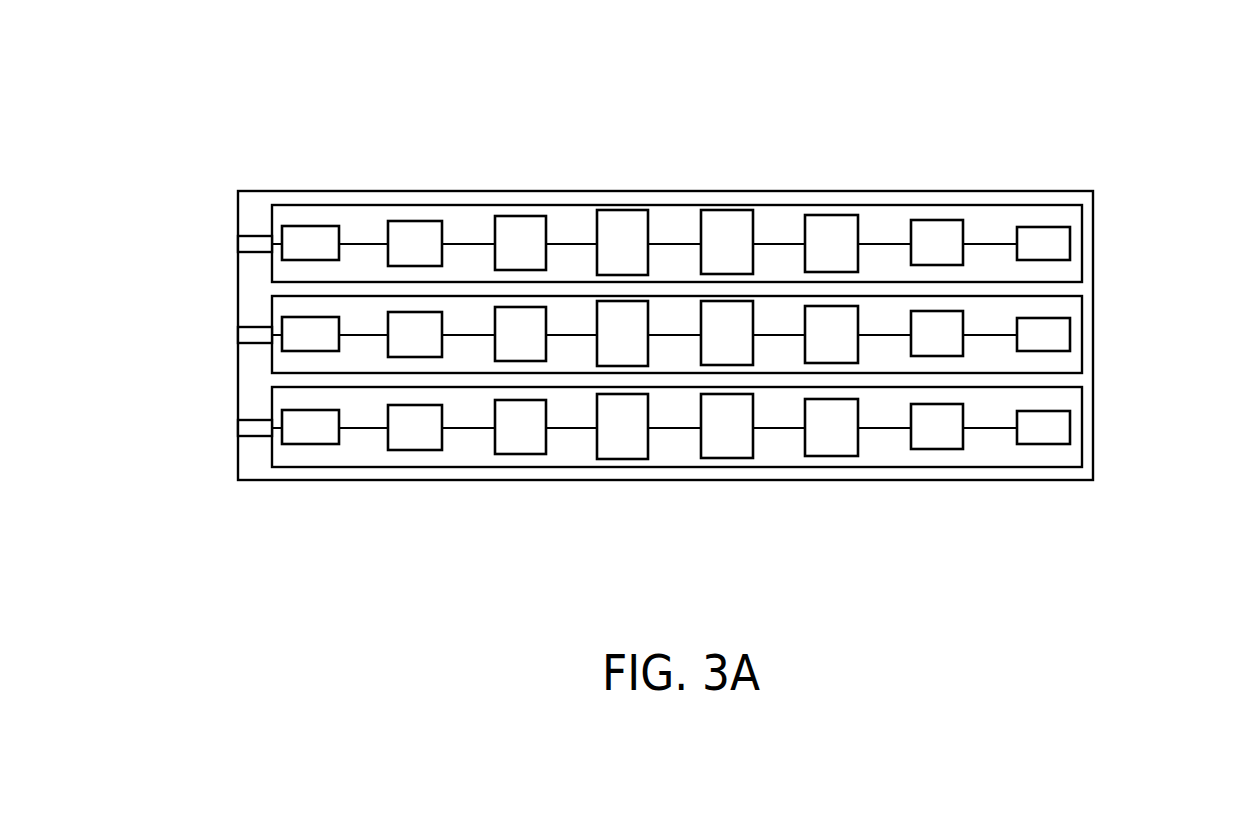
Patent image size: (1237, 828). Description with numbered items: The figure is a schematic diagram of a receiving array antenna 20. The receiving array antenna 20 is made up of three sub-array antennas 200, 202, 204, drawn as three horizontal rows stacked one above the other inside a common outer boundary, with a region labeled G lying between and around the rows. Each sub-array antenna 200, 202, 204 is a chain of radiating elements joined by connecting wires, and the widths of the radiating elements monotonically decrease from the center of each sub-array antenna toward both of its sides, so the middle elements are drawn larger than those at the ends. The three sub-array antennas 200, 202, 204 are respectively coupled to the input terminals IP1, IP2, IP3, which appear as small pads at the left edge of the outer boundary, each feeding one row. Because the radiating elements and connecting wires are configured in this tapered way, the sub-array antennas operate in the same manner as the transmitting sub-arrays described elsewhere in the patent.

The receiving array antenna 20 is at (1072, 110).
The sub-array antenna 200 is at (1075, 218).
The sub-array antenna 202 is at (1077, 311).
The sub-array antenna 204 is at (1077, 400).
The gap region G is at (1097, 263).
The input terminal IP1 is at (227, 248).
The input terminal IP2 is at (227, 336).
The input terminal IP3 is at (227, 429).